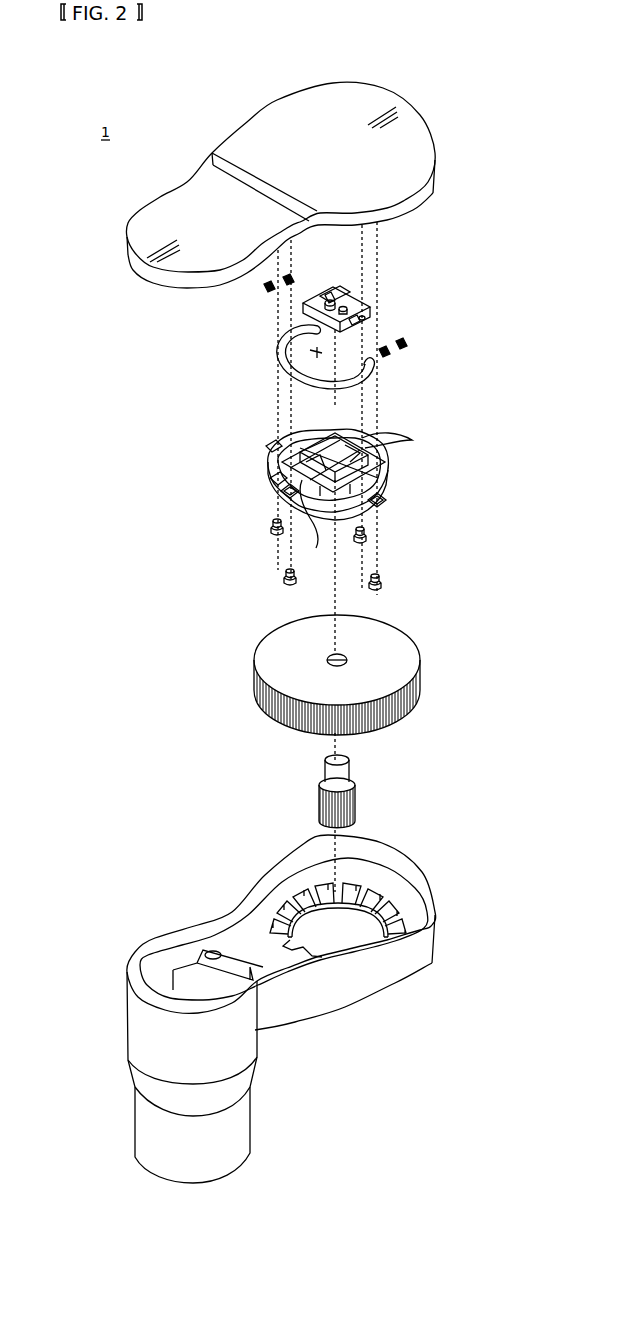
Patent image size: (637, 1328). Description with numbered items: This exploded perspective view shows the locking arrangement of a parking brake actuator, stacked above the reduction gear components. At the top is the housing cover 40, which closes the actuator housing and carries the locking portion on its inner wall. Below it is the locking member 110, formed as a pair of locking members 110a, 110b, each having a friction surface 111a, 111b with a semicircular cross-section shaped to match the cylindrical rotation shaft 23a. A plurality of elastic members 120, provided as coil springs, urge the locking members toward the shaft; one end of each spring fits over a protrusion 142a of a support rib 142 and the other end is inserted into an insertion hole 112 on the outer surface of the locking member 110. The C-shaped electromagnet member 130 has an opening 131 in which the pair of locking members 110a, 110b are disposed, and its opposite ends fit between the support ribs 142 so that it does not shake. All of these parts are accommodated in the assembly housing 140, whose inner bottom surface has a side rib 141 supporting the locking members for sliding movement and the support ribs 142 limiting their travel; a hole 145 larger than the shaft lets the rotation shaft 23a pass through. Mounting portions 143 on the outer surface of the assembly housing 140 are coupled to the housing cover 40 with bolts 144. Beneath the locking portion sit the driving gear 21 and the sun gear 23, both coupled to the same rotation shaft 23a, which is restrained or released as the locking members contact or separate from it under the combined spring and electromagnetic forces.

The housing cover 40 is at (147, 276).
The locking member 110 is at (447, 270).
The locking member 110a is at (347, 300).
The locking member 110b is at (350, 310).
The friction surface 111a is at (331, 299).
The friction surface 111b is at (365, 313).
The insertion hole 112 is at (370, 318).
The elastic member 120 is at (406, 344).
The electromagnet member 130 is at (374, 376).
The opening 131 is at (279, 352).
The assembly housing 140 is at (334, 494).
The side rib 141 is at (303, 520).
The support rib 142 is at (396, 447).
The protrusion 142a is at (268, 448).
The mounting portion 143 is at (282, 492).
The bolt 144 is at (287, 582).
The hole 145 is at (272, 480).
The driving gear 21 is at (407, 648).
The sun gear 23 is at (365, 791).
The rotation shaft 23a is at (350, 763).